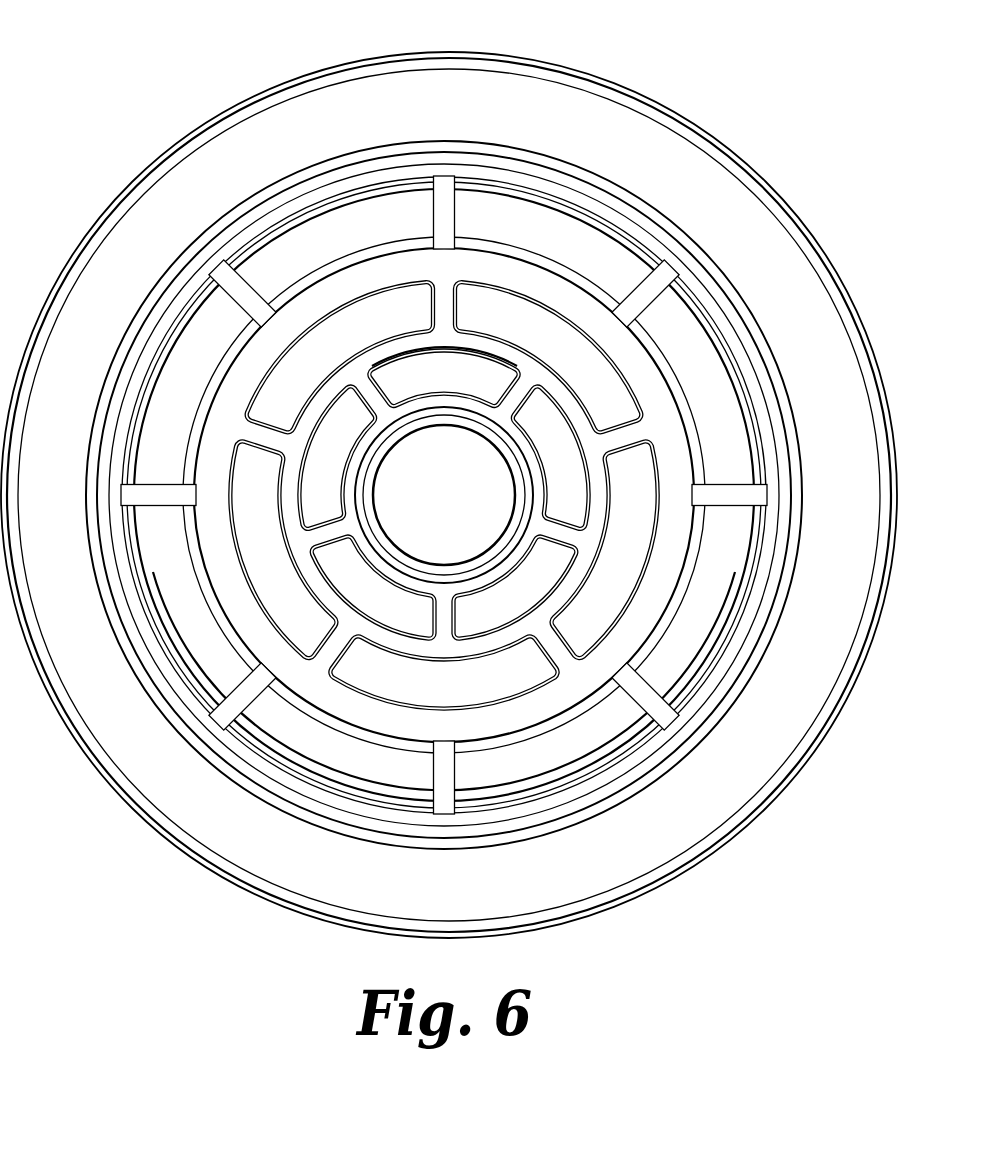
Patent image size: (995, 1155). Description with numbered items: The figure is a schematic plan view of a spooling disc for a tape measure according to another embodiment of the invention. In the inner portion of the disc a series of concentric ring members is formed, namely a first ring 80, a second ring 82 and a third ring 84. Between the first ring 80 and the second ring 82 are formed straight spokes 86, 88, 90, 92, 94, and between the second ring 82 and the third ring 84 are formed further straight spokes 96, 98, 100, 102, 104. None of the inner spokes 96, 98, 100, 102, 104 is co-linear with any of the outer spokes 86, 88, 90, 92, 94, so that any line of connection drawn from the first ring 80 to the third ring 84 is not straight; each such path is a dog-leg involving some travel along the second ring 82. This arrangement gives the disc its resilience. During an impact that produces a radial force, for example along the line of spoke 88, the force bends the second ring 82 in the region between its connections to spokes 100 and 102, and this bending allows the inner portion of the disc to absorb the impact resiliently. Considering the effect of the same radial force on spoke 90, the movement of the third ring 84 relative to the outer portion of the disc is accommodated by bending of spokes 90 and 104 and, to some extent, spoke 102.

The first ring 80 is at (235, 594).
The second ring 82 is at (320, 390).
The third ring 84 is at (412, 410).
The straight spoke 86 is at (252, 440).
The straight spoke 88 is at (445, 311).
The straight spoke 90 is at (628, 440).
The straight spoke 92 is at (558, 652).
The straight spoke 94 is at (336, 655).
The straight spoke 96 is at (445, 615).
The straight spoke 98 is at (330, 530).
The straight spoke 100 is at (360, 403).
The straight spoke 102 is at (504, 390).
The straight spoke 104 is at (557, 528).